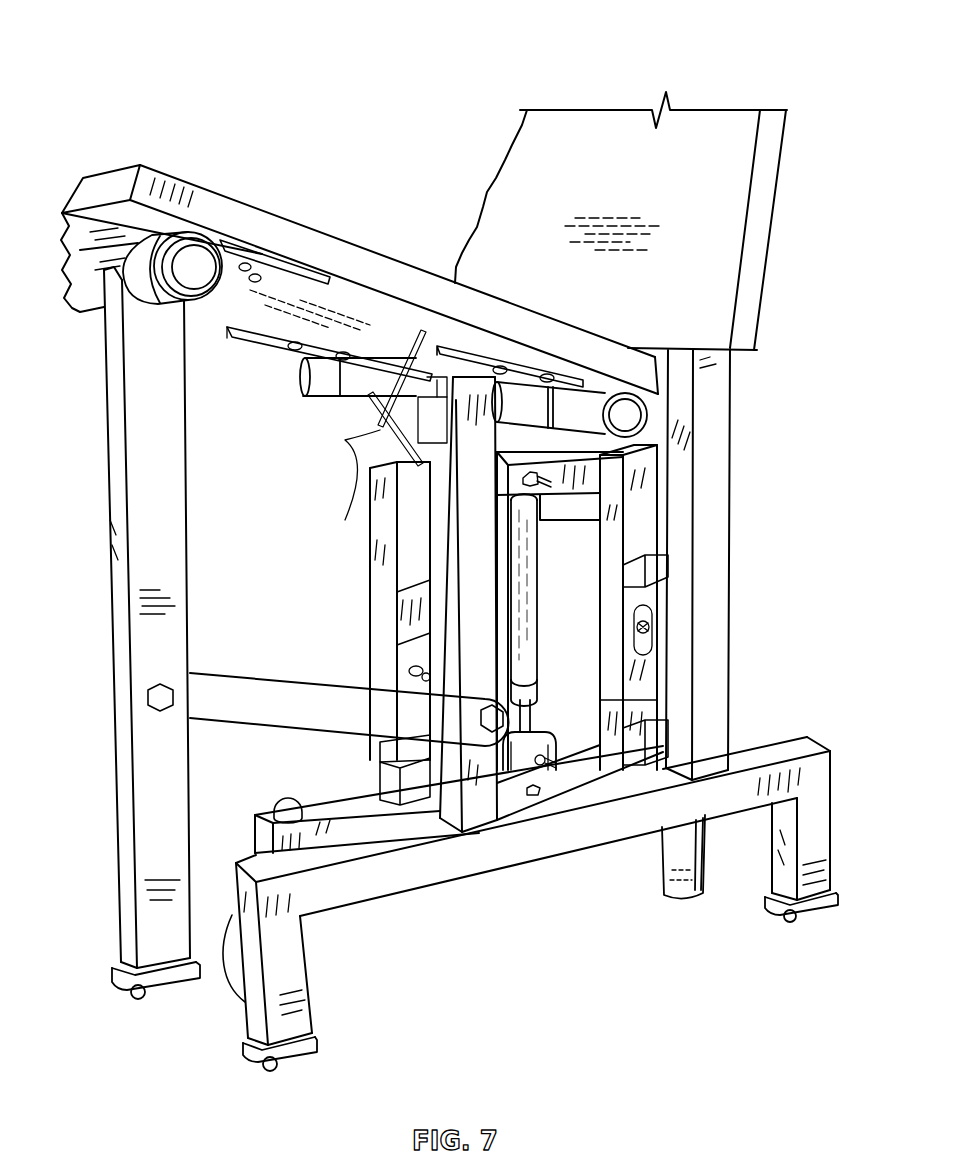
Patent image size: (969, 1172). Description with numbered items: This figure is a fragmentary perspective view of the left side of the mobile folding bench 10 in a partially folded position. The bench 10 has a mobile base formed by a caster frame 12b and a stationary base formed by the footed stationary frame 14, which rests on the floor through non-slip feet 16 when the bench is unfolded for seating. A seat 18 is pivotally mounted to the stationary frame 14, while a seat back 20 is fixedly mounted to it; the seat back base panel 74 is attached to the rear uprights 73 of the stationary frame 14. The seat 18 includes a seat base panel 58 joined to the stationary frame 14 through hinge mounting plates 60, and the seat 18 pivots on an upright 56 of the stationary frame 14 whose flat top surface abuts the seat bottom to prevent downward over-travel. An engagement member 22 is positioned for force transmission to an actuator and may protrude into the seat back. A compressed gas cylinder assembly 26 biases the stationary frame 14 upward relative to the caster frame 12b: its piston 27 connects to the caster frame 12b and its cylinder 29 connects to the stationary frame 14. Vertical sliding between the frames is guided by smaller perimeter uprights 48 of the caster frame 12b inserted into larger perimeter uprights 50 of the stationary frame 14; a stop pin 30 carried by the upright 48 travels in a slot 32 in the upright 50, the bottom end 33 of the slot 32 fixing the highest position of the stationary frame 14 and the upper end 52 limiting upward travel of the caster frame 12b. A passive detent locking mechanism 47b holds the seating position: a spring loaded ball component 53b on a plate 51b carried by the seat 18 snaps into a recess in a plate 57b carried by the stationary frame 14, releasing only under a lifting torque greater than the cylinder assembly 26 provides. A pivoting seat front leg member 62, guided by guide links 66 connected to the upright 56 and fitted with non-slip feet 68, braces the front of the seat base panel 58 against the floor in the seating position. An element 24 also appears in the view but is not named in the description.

The mobile folding bench 10 is at (162, 66).
The caster frame 12b is at (320, 803).
The stationary frame 14 is at (834, 812).
The non-slip feet 16 is at (832, 906).
The seat 18 is at (172, 154).
The seat back 20 is at (792, 226).
The engagement member 22 is at (385, 400).
The cable / tube 24 is at (670, 882).
The compressed gas cylinder assembly 26 is at (543, 650).
The piston 27 is at (538, 722).
The cylinder 29 is at (540, 590).
The stop pin 30 is at (416, 672).
The slot 32 is at (426, 675).
The bottom end 33 is at (652, 698).
The spring loaded ball detent locking mechanism 47b is at (366, 433).
The smaller perimeter uprights 48 is at (385, 780).
The larger perimeter uprights 50 is at (662, 732).
The plate 51b is at (390, 410).
The upper end 52 is at (416, 645).
The spring loaded ball component 53b is at (403, 393).
The upright 56 is at (440, 802).
The plate 57b is at (390, 472).
The seat base panel 58 is at (210, 205).
The hinge mounting plates 60 is at (277, 343).
The pivoting seat front leg member 62 is at (118, 442).
The guide links 66 is at (224, 690).
The non-slip feet 68 is at (160, 1004).
The rear uprights 73 is at (732, 416).
The seat back base panel 74 is at (672, 183).